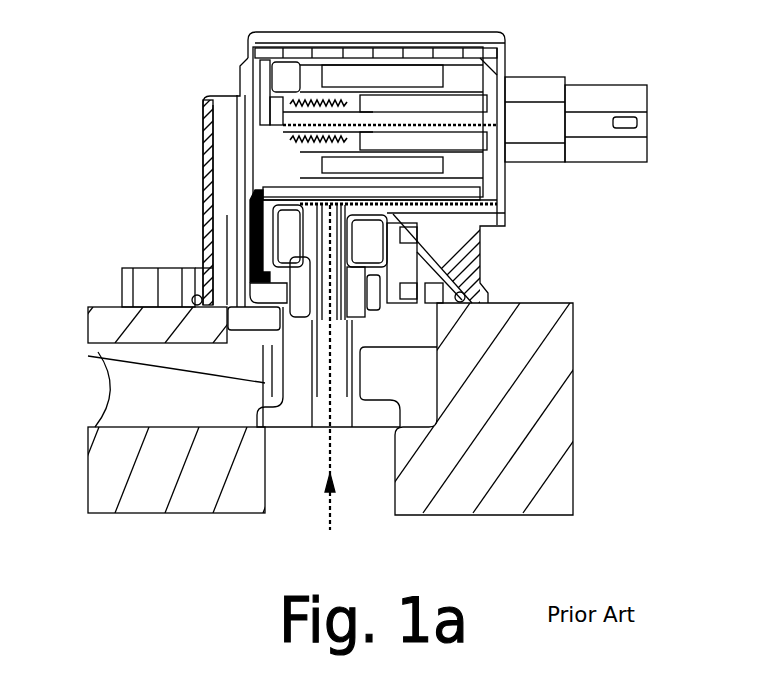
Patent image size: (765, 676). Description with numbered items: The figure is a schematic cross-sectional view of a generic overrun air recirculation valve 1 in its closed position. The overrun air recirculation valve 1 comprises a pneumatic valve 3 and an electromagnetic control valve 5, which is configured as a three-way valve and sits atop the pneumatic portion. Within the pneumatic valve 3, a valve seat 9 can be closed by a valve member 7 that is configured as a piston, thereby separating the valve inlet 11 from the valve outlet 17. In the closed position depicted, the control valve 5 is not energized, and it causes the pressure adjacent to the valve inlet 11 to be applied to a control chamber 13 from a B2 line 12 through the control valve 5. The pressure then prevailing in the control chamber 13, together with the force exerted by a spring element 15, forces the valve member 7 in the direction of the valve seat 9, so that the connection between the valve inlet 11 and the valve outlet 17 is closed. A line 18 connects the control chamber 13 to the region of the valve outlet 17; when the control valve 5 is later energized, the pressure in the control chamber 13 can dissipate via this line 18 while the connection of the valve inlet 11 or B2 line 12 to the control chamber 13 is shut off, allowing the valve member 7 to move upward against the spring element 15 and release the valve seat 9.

The overrun air recirculation valve 1 is at (560, 259).
The pneumatic valve 3 is at (392, 343).
The electromagnetic control valve 5 is at (515, 62).
The valve member 7 is at (100, 349).
The valve seat 9 is at (272, 405).
The valve inlet 11 is at (386, 491).
The B2 line 12 is at (342, 363).
The control chamber 13 is at (258, 270).
The spring element 15 is at (425, 247).
The valve outlet 17 is at (223, 419).
The line 18 is at (203, 163).